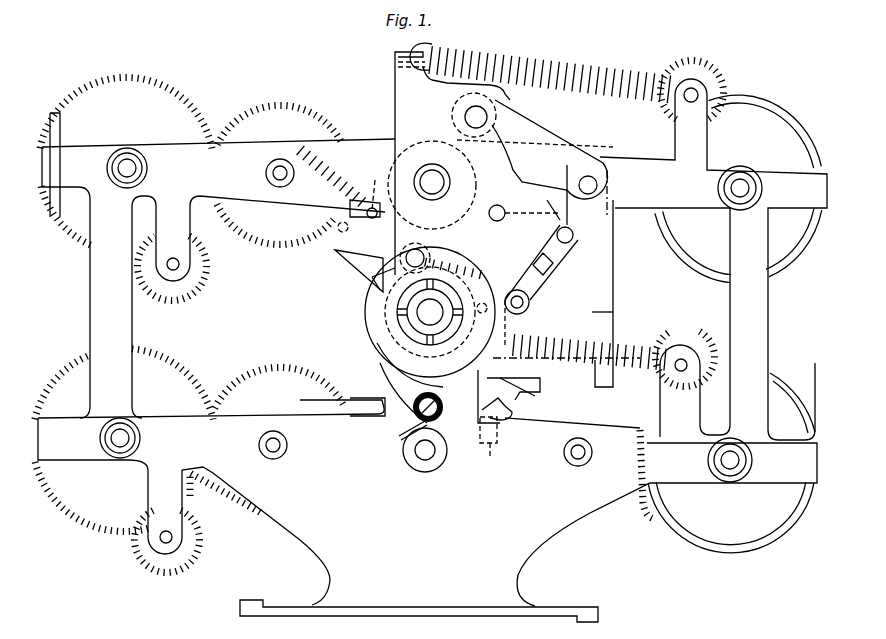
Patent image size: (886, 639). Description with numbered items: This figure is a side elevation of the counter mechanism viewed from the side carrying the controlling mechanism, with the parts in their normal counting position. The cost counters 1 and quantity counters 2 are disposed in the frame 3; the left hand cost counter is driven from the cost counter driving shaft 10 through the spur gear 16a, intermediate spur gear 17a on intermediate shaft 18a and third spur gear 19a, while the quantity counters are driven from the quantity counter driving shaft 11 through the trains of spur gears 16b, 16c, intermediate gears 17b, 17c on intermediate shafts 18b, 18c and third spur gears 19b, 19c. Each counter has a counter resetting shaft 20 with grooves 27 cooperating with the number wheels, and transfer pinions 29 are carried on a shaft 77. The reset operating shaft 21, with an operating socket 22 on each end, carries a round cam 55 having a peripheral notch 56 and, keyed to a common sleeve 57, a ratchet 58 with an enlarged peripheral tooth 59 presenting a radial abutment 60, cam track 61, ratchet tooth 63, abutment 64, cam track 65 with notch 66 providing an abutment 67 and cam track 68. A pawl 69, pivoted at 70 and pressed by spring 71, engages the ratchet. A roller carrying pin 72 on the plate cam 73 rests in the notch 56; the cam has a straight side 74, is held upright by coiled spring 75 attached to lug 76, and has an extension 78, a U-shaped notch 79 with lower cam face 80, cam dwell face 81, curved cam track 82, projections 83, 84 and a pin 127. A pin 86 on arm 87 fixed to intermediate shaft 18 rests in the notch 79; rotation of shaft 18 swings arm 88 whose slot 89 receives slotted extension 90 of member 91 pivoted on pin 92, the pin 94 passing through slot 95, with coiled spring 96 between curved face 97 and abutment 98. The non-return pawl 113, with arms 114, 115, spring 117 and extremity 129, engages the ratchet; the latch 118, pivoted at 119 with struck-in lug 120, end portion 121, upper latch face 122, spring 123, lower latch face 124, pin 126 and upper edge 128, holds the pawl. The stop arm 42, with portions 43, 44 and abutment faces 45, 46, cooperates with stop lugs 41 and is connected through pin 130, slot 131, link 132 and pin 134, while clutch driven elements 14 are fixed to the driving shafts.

The cost counter 1 is at (131, 72).
The quantity counter 2 is at (158, 354).
The frame 3 is at (774, 182).
The cost counter driving shaft 10 is at (442, 186).
The quantity counter driving shaft 11 is at (429, 455).
The driven element 14 is at (478, 290).
The spur gear 16a is at (350, 208).
The spur gear 16b is at (509, 402).
The spur gear 16c is at (350, 403).
The intermediate spur gear 17a is at (262, 100).
The intermediate spur gear 17b is at (633, 428).
The intermediate spur gear 17c is at (276, 379).
The intermediate shaft 18 is at (600, 180).
The intermediate shaft 18a is at (272, 173).
The intermediate shaft 18b is at (572, 455).
The intermediate shaft 18c is at (285, 445).
The third spur gear 19a is at (195, 121).
The third spur gear 19b is at (650, 507).
The third spur gear 19c is at (190, 379).
The counter resetting shaft 20 is at (134, 168).
The reset operating shaft 21 is at (430, 312).
The operating socket 22 is at (428, 332).
The groove or notch 27 is at (118, 168).
The transfer pinion 29 is at (201, 282).
The stop lug 41 is at (425, 314).
The stop arm 42 is at (523, 389).
The oppositely extending portion 43 is at (506, 386).
The oppositely extending portion 44 is at (334, 255).
The abutment face 45 is at (537, 411).
The abutment face 46 is at (338, 221).
The round cam 55 is at (386, 362).
The peripheral notch 56 is at (414, 250).
The common sleeve 57 is at (409, 331).
The ratchet 58 is at (441, 372).
The enlarged peripheral tooth 59 is at (376, 345).
The radial abutment 60 is at (391, 330).
The cam track 61 is at (396, 315).
The ratchet tooth 63 is at (455, 255).
The abutment 64 is at (482, 279).
The cam track 65 is at (479, 310).
The notch 66 is at (489, 324).
The abutment 67 is at (450, 345).
The cam track 68 is at (457, 372).
The pawl 69 is at (398, 412).
The pivot 70 is at (438, 419).
The spring 71 is at (400, 440).
The roller carrying pin 72 is at (419, 252).
The plate cam 73 is at (396, 117).
The straight side 74 is at (393, 153).
The coiled spring 75 is at (506, 56).
The lug 76 is at (408, 50).
The shaft 77 is at (706, 77).
The extension 78 is at (511, 96).
The U-shaped notch or cam 79 is at (458, 106).
The lower cam face 80 is at (489, 123).
The cam dwell face 81 is at (506, 135).
The curved cam track 82 is at (565, 180).
The projection 83 is at (562, 213).
The projection 84 is at (541, 262).
The pin 86 is at (466, 119).
The arm 87 is at (566, 148).
The arm 88 is at (614, 276).
The slot 89 is at (612, 326).
The slotted extension 90 is at (612, 336).
The member 91 is at (572, 397).
The pin 92 is at (428, 360).
The pin 94 is at (604, 325).
The slot 95 is at (590, 331).
The coiled spring 96 is at (560, 366).
The curved face 97 is at (590, 405).
The abutment 98 is at (505, 366).
The non-return pawl 113 is at (385, 174).
The arm 114 is at (539, 222).
The arm 115 is at (351, 238).
The coiled spring 117 is at (336, 150).
The non-return pawl latch 118 is at (570, 268).
The pivot 119 is at (522, 310).
The struck-in lug 120 is at (545, 283).
The end portion 121 is at (595, 282).
The upper latch face 122 is at (530, 302).
The coiled spring 123 is at (633, 370).
The lower latch face 124 is at (521, 233).
The pin 126 is at (574, 235).
The pin 127 is at (497, 205).
The upper edge 128 is at (510, 213).
The extremity 129 is at (372, 277).
The pin 130 is at (380, 291).
The slot 131 is at (380, 288).
The arm or link 132 is at (445, 236).
The pin 134 is at (458, 247).